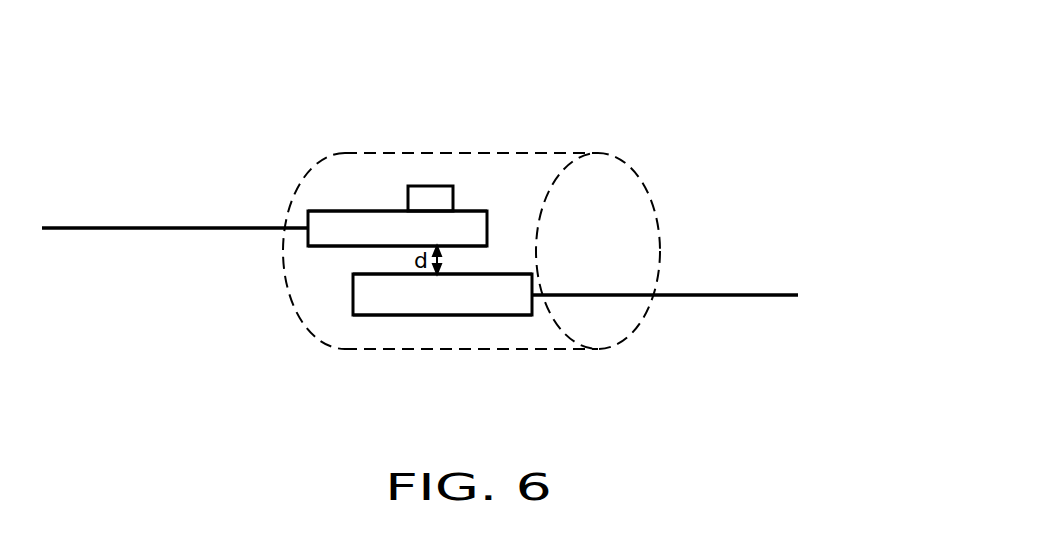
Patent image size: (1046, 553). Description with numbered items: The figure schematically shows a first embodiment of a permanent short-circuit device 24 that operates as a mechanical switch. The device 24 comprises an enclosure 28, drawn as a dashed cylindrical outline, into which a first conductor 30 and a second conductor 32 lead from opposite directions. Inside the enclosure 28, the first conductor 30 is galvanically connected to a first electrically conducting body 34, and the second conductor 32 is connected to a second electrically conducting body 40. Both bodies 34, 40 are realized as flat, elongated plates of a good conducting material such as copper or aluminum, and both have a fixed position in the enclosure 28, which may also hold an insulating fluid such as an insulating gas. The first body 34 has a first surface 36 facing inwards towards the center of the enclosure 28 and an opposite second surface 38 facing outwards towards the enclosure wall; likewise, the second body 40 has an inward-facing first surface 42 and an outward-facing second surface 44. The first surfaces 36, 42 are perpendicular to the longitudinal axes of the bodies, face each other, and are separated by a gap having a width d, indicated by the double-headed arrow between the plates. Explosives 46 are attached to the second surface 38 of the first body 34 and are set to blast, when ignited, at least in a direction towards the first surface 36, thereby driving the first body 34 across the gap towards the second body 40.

The permanent short-circuit device 24 is at (690, 163).
The enclosure 28 is at (453, 153).
The first conductor 30 is at (190, 226).
The second conductor 32 is at (737, 295).
The first electrically conducting body 34 is at (353, 233).
The first surface of first body 36 is at (367, 246).
The second surface of first body 38 is at (383, 210).
The second electrically conducting body 40 is at (421, 289).
The first surface of second body 42 is at (482, 273).
The second surface of second body 44 is at (478, 315).
The explosives 46 is at (453, 191).